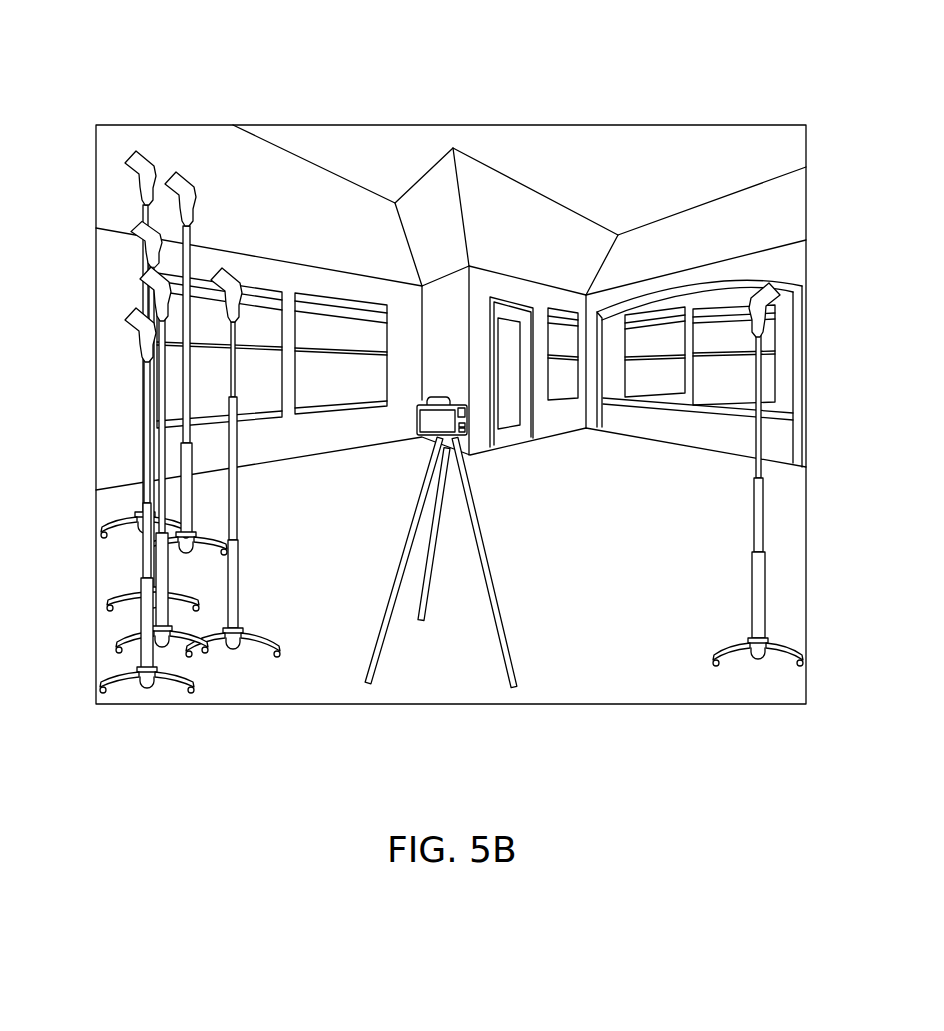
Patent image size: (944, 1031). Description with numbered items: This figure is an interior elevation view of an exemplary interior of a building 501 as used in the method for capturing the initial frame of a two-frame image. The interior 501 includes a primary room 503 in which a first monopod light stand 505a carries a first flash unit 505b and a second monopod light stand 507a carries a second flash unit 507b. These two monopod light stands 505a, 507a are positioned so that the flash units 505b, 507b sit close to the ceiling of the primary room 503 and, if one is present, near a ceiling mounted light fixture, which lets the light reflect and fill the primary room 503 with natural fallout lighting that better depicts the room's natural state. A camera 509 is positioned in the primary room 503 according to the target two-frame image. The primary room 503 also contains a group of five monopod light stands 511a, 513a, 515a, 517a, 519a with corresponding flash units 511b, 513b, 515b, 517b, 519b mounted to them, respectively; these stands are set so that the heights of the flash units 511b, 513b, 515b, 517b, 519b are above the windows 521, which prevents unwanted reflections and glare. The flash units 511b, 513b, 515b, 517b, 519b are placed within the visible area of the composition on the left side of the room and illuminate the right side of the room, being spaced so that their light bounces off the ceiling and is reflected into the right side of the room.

The interior of a building 501 is at (147, 50).
The primary room 503 is at (615, 563).
The first monopod light stand 505a is at (238, 583).
The first flash unit 505b is at (227, 268).
The second monopod light stand 507a is at (766, 594).
The second flash unit 507b is at (782, 290).
The camera 509 is at (416, 422).
The monopod light stand 511a is at (146, 659).
The flash unit 511b is at (143, 333).
The monopod light stand 513a is at (158, 620).
The flash unit 513b is at (147, 277).
The monopod light stand 515a is at (148, 307).
The flash unit 515b is at (147, 250).
The monopod light stand 517a is at (143, 218).
The flash unit 517b is at (143, 150).
The monopod light stand 519a is at (183, 236).
The flash unit 519b is at (188, 172).
The windows 521 is at (343, 333).